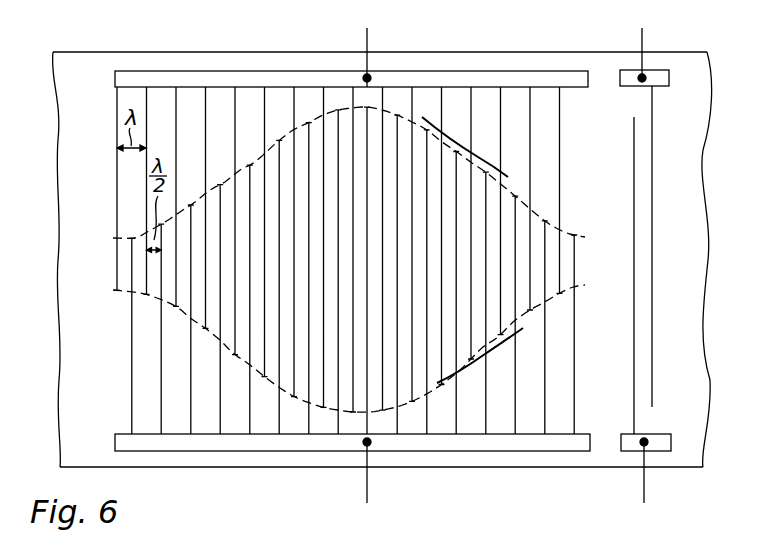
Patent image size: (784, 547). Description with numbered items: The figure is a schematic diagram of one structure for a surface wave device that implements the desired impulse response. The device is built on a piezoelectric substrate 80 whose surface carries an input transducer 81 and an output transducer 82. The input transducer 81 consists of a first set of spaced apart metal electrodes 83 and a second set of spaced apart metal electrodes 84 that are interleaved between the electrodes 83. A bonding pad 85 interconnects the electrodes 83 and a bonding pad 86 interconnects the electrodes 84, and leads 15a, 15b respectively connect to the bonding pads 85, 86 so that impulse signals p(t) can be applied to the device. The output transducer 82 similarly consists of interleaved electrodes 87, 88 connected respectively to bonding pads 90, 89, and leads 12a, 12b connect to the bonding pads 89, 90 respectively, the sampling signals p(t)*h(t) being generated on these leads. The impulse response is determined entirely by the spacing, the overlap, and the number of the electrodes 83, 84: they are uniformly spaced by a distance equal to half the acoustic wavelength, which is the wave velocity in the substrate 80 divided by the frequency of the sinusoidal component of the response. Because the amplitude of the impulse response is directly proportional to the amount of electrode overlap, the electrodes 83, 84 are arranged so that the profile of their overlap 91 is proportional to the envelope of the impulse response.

The piezoelectric substrate 80 is at (686, 111).
The input transducer 81 is at (104, 199).
The output transducer 82 is at (697, 174).
The first set of spaced apart metal electrodes 83 is at (265, 149).
The second set of spaced apart metal electrodes 84 is at (251, 398).
The bonding pad 85 is at (283, 82).
The bonding pad 86 is at (257, 441).
The electrode 87 is at (633, 240).
The electrode 88 is at (653, 308).
The bonding pad 89 is at (656, 74).
The bonding pad 90 is at (656, 434).
The overlap profile 91 is at (466, 149).
The lead 12a is at (642, 42).
The lead 12b is at (644, 490).
The lead 15a is at (367, 42).
The lead 15b is at (367, 490).